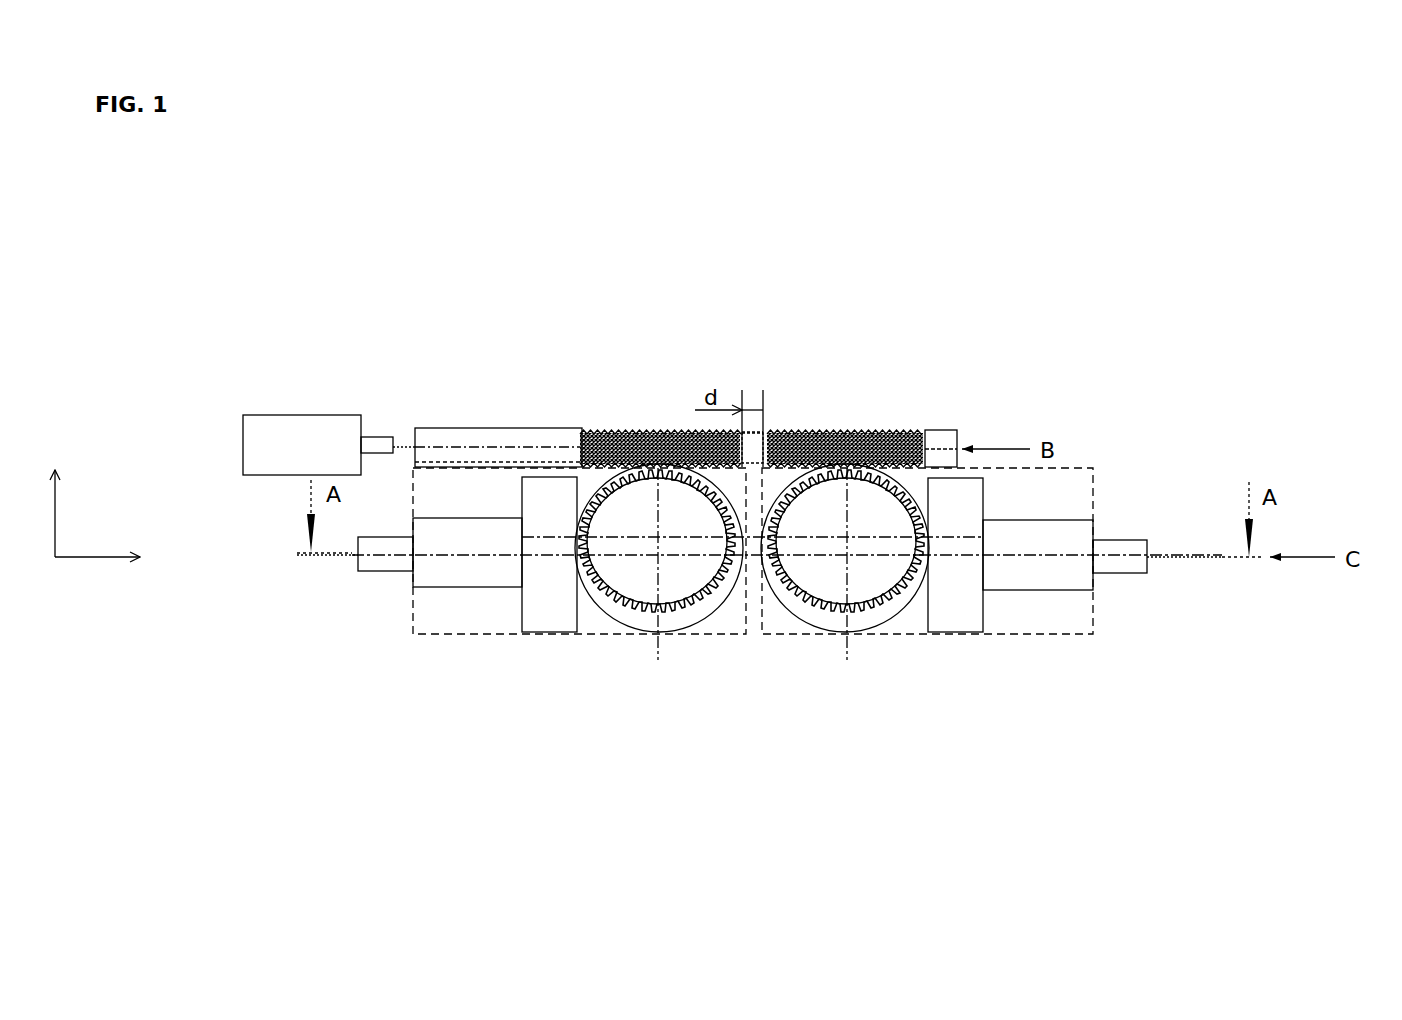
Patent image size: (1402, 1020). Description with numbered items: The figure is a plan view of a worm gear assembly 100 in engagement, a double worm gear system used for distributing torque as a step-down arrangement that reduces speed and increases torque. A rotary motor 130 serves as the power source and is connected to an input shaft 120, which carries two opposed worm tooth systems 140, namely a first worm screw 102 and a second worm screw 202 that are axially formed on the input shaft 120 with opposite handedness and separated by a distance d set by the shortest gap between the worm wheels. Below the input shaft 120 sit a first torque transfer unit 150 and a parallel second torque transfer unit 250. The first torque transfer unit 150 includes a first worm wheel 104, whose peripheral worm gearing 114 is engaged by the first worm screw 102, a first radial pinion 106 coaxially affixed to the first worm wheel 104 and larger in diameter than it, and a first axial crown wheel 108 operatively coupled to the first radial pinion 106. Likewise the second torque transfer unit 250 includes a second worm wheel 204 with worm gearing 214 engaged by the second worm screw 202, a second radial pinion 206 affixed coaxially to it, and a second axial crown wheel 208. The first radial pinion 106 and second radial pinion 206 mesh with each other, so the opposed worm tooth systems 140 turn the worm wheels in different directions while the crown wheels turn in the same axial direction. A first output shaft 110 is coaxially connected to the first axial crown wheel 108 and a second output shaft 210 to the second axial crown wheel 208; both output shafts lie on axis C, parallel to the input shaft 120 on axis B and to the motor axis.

The worm gear assembly 100 is at (505, 200).
The first worm screw 102 is at (662, 432).
The first worm wheel 104 is at (622, 575).
The first radial pinion 106 is at (688, 628).
The first axial crown wheel 108 is at (522, 632).
The first output shaft 110 is at (372, 573).
The worm gearing 114 is at (718, 594).
The input shaft 120 is at (488, 428).
The rotary motor 130 is at (243, 440).
The opposed worm tooth systems 140 is at (833, 428).
The first torque transfer unit 150 is at (447, 637).
The second worm screw 202 is at (848, 432).
The second worm wheel 204 is at (857, 600).
The second radial pinion 206 is at (808, 623).
The second axial crown wheel 208 is at (983, 632).
The second output shaft 210 is at (1130, 573).
The worm gearing 214 is at (792, 594).
The second torque transfer unit 250 is at (1082, 640).